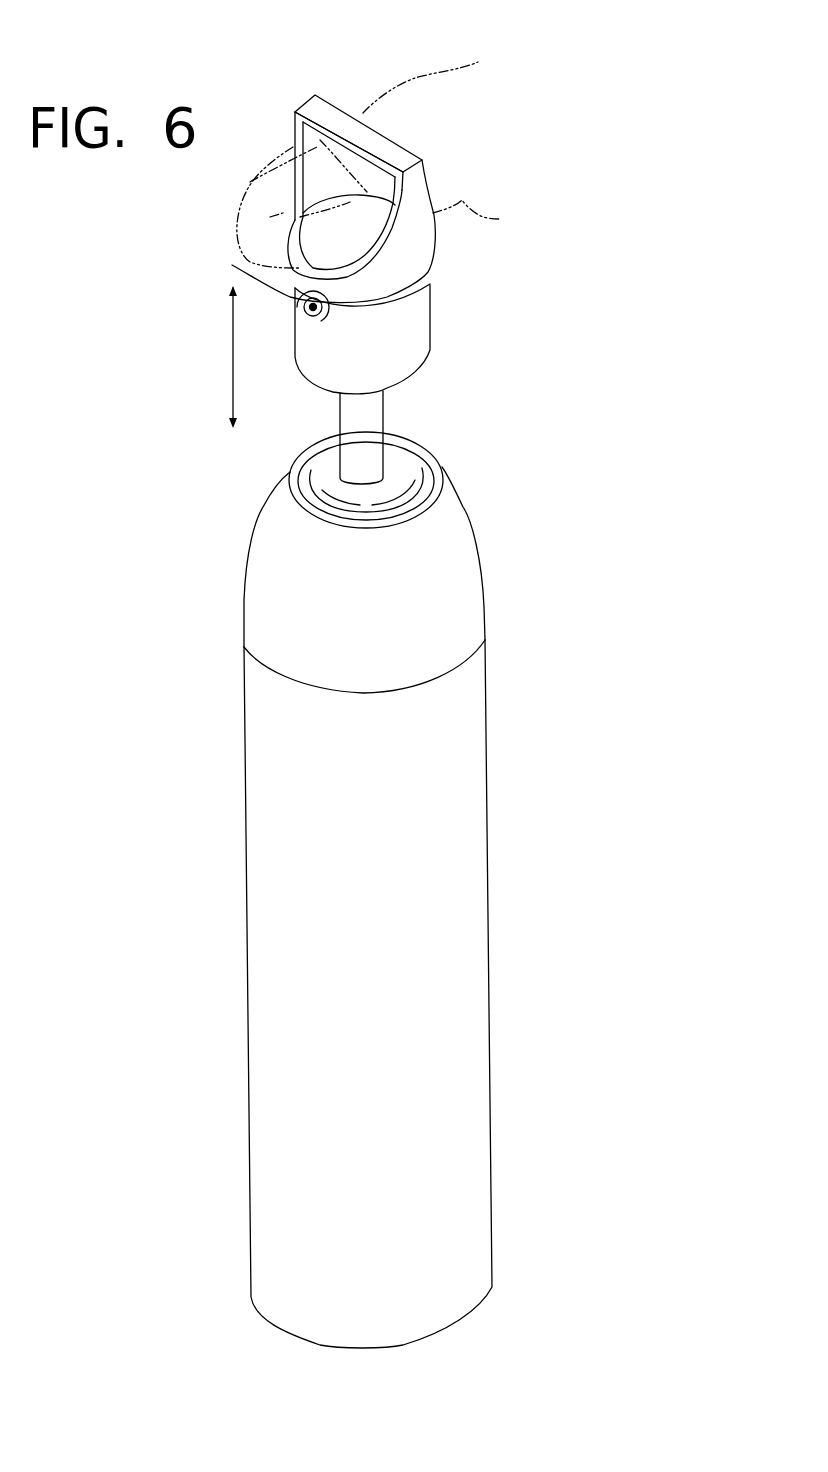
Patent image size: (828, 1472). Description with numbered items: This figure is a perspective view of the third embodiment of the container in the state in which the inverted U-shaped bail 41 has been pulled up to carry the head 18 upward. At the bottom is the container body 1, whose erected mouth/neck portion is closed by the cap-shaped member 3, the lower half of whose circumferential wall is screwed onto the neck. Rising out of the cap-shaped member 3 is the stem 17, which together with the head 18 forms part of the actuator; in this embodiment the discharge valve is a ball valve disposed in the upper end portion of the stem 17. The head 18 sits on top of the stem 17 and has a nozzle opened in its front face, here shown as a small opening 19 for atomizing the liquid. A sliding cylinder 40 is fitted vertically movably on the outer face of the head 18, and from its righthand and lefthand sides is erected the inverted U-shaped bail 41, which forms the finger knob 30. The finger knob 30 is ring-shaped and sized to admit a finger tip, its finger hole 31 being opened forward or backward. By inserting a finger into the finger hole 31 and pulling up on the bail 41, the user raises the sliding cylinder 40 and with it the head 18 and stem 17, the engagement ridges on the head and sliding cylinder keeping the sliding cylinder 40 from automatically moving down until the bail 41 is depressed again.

The container body 1 is at (237, 1027).
The cap-shaped member 3 is at (237, 579).
The stem 17 is at (377, 418).
The head 18 is at (418, 342).
The spray nozzle orifice 19 is at (305, 305).
The finger knob 30 is at (355, 111).
The finger hole 31 is at (310, 137).
The sliding cylinder 40 is at (418, 263).
The inverted U-shaped bail 41 is at (403, 152).